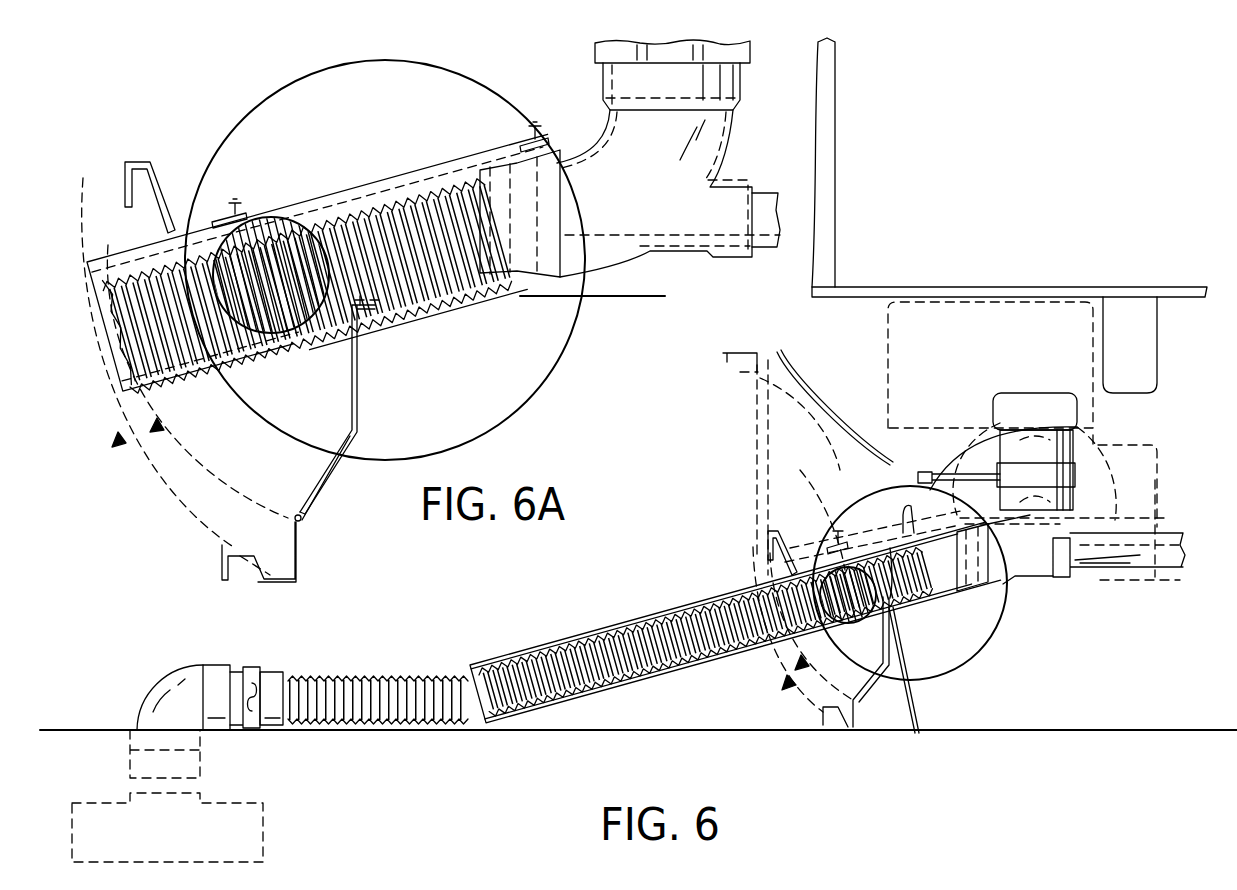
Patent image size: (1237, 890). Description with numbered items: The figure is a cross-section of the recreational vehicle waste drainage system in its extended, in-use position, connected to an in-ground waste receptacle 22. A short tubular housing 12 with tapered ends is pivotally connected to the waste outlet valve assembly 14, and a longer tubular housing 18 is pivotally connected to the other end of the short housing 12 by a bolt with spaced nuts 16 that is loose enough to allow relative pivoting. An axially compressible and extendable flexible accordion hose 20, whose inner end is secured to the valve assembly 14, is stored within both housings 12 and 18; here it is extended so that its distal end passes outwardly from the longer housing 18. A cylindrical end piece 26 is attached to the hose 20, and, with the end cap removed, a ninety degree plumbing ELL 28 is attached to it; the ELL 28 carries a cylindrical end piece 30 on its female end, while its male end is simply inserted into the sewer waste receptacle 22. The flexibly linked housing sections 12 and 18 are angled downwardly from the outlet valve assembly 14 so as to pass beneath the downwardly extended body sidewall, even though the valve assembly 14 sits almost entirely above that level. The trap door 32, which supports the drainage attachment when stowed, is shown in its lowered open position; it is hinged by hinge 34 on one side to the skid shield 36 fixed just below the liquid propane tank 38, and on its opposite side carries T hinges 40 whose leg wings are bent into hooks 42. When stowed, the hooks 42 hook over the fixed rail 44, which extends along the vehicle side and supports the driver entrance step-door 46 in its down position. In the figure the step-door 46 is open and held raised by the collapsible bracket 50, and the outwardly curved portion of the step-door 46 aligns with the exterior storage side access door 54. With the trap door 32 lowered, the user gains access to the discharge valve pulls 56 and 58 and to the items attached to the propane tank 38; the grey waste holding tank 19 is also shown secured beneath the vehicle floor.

In FIG. 6A, the short tubular housing 12 is at (343, 182).
In FIG. 6, the short tubular housing 12 is at (950, 607).
In FIG. 6A, the waste outlet valve assembly 14 is at (594, 52).
In FIG. 6A, the bolt with spaced nuts 16 is at (237, 206).
In FIG. 6, the bolt with spaced nuts 16 is at (1077, 426).
In FIG. 6A, the longer tubular housing 18 is at (190, 362).
In FIG. 6, the longer tubular housing 18 is at (665, 615).
In FIG. 6, the grey waste holding tank 19 is at (965, 305).
In FIG. 6A, the flexible accordion hose 20 is at (288, 328).
In FIG. 6, the flexible accordion hose 20 is at (395, 677).
In FIG. 6, the in-ground waste receptacle 22 is at (130, 757).
In FIG. 6, the cylindrical end piece 26 is at (273, 728).
In FIG. 6, the 90 degree plumbing ELL 28 is at (165, 683).
In FIG. 6, the cylindrical end piece 30 is at (246, 668).
In FIG. 6A, the trap door 32 is at (360, 405).
In FIG. 6, the trap door 32 is at (888, 632).
In FIG. 6A, the hinge 34 is at (372, 306).
In FIG. 6A, the skid shield 36 is at (607, 300).
In FIG. 6, the liquid propane tank 38 is at (978, 447).
In FIG. 6A, the T hinge 40 is at (308, 516).
In FIG. 6, the T hinge 40 is at (908, 716).
In FIG. 6A, the hook 42 is at (298, 560).
In FIG. 6, the hook 42 is at (855, 727).
In FIG. 6A, the fixed rail 44 is at (136, 161).
In FIG. 6, the driver entrance step-door 46 is at (785, 358).
In FIG. 6, the collapsible bracket 50 is at (767, 403).
In FIG. 6, the exterior storage side access door 54 is at (1160, 476).
In FIG. 6, the discharge valve pull 56 is at (922, 474).
In FIG. 6, the discharge valve pull 58 is at (910, 603).